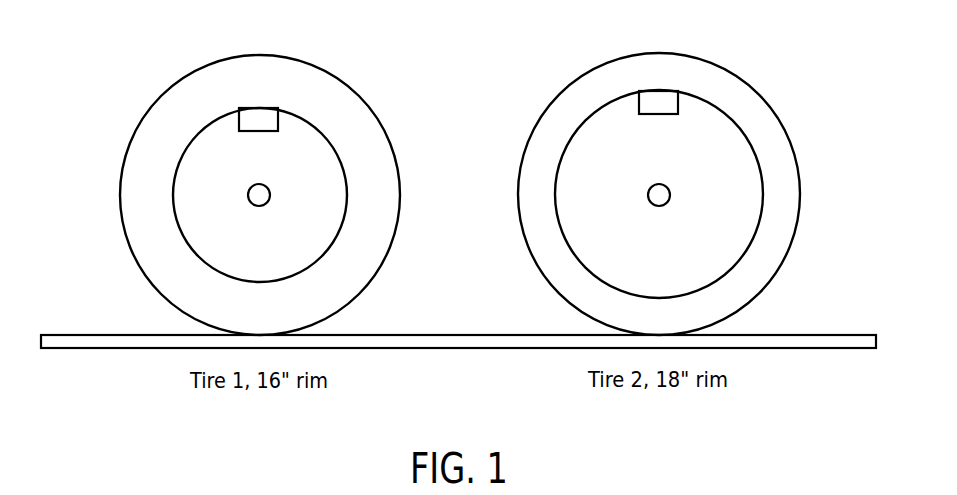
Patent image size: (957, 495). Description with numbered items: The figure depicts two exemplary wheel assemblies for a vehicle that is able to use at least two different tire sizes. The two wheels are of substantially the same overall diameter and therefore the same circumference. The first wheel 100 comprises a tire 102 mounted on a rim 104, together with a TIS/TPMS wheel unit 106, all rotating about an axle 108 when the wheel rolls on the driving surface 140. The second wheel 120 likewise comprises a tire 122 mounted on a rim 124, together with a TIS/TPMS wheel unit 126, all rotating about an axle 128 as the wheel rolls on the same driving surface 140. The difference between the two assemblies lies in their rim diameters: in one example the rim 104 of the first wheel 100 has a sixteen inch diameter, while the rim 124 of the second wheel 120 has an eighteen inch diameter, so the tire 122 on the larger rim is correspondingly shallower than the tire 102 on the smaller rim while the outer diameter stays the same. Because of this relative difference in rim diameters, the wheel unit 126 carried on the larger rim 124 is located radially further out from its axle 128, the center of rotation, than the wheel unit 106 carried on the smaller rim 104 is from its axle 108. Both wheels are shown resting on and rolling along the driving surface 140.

The wheel 100 is at (286, 195).
The tire 102 is at (387, 219).
The rim 104 is at (188, 187).
The TIS/TPMS wheel unit 106 is at (257, 114).
The axle 108 is at (270, 195).
The wheel 120 is at (660, 178).
The tire 122 is at (786, 219).
The rim 124 is at (570, 200).
The TIS/TPMS wheel unit 126 is at (657, 98).
The axle 128 is at (670, 195).
The driving surface 140 is at (809, 331).